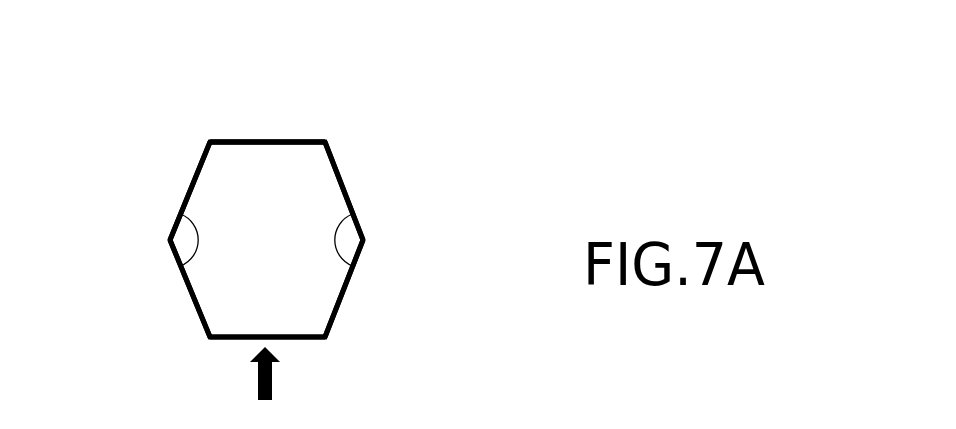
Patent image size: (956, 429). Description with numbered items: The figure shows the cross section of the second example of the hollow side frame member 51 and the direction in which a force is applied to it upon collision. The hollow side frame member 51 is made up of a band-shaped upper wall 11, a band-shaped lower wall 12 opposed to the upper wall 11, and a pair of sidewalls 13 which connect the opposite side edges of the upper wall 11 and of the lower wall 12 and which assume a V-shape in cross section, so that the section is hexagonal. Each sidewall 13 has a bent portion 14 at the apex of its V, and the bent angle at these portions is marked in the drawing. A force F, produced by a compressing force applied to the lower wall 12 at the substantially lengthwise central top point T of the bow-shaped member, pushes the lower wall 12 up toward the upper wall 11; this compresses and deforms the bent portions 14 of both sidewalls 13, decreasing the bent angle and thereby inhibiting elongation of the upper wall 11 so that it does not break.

The hollow side frame member 51 is at (362, 168).
The band-shaped upper wall 11 is at (265, 142).
The band-shaped lower wall 12 is at (230, 340).
The sidewalls 13 is at (187, 287).
The bent portions 14 is at (168, 240).
The top point T is at (225, 141).
The force F is at (270, 387).